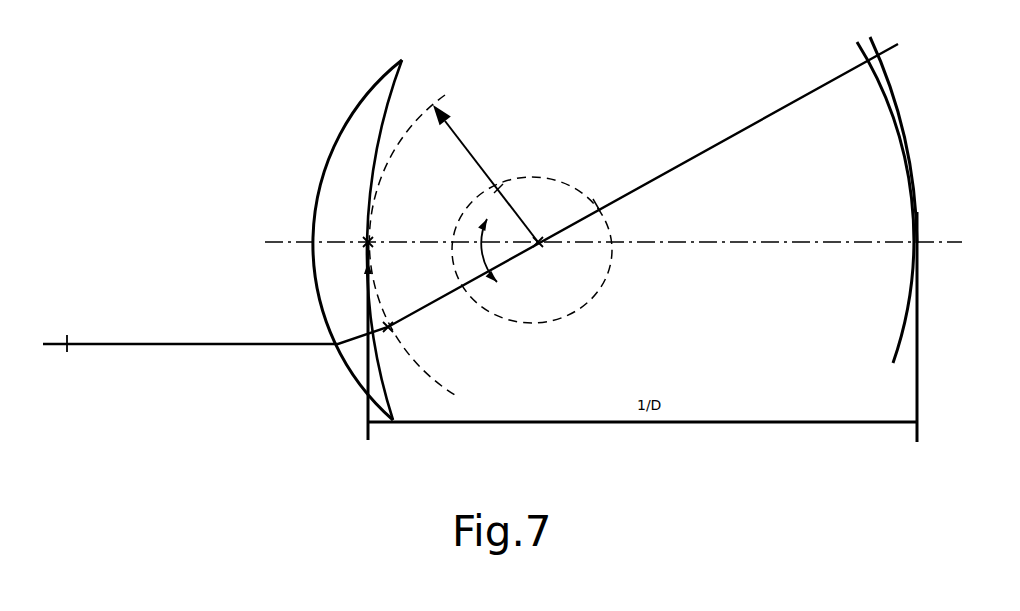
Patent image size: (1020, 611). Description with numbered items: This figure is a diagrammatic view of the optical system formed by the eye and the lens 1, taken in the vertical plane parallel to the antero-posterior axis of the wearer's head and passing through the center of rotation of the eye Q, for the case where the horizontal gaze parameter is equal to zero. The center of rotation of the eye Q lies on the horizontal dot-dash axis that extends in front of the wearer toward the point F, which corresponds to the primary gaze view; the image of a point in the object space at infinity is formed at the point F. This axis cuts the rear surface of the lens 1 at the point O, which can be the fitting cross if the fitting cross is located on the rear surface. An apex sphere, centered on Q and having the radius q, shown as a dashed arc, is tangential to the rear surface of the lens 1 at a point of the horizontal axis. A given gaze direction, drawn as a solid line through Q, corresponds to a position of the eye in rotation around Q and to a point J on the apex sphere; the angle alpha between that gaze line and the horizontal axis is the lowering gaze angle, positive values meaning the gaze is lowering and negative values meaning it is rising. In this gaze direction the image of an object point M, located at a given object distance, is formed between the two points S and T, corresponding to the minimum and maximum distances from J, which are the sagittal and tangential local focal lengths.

The lens 1 is at (330, 374).
The point O is at (354, 325).
The point F' F is at (898, 326).
The point M is at (470, 215).
The point J is at (398, 336).
The point T is at (871, 197).
The point S is at (893, 125).
The center of rotation of the eye Q' Q is at (490, 245).
The radius q' q is at (516, 173).
The angle α alpha is at (504, 266).